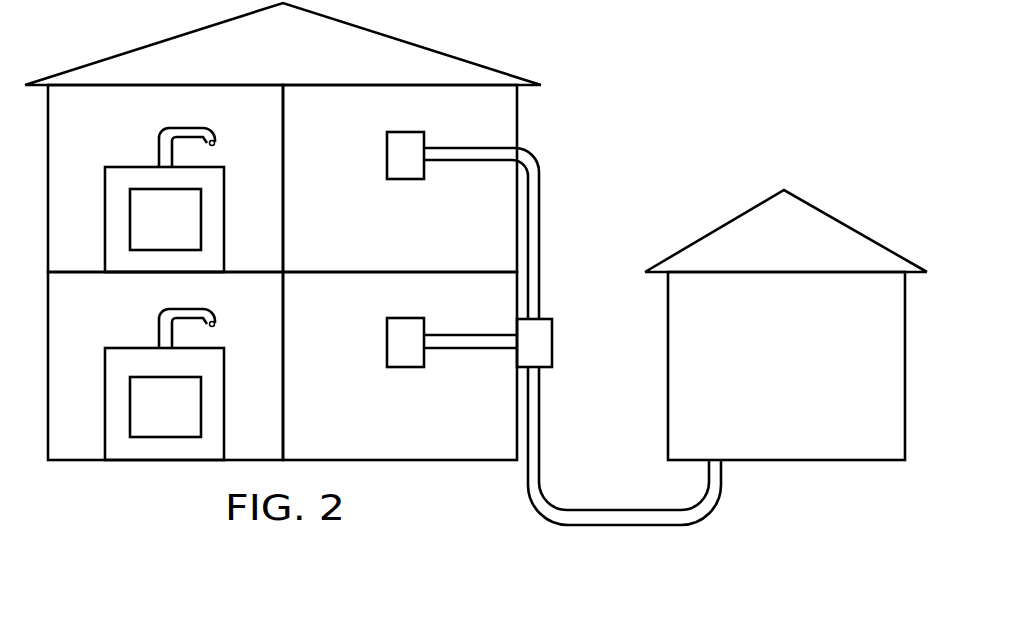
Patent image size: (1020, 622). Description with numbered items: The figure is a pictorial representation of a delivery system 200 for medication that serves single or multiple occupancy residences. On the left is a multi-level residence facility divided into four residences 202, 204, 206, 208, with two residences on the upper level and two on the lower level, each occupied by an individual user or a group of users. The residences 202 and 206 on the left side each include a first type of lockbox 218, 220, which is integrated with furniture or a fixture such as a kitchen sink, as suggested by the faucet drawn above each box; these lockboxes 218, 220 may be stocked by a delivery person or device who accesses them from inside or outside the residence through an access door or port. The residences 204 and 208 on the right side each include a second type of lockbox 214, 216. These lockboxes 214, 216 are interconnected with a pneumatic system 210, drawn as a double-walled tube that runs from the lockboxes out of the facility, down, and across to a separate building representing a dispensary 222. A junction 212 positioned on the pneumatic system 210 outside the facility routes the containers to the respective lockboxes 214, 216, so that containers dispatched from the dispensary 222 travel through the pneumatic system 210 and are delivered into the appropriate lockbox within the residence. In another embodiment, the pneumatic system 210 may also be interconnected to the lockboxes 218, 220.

The delivery system 200 is at (651, 55).
The residence 202 is at (117, 125).
The residence 204 is at (492, 125).
The residence 206 is at (117, 313).
The residence 208 is at (492, 313).
The pneumatic system 210 is at (623, 526).
The junction 212 is at (552, 342).
The lockbox 214 is at (405, 180).
The lockbox 216 is at (405, 368).
The lockbox 218 is at (189, 237).
The lockbox 220 is at (189, 424).
The dispensary 222 is at (808, 383).